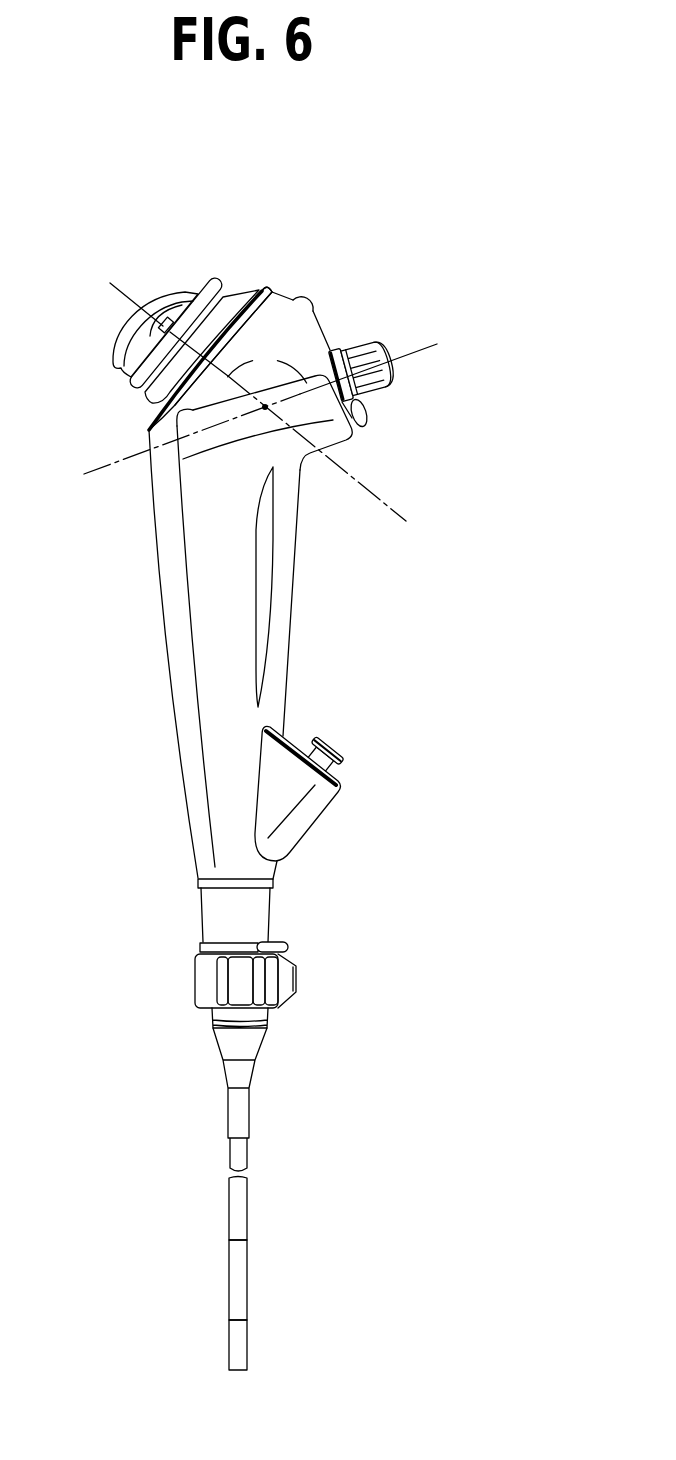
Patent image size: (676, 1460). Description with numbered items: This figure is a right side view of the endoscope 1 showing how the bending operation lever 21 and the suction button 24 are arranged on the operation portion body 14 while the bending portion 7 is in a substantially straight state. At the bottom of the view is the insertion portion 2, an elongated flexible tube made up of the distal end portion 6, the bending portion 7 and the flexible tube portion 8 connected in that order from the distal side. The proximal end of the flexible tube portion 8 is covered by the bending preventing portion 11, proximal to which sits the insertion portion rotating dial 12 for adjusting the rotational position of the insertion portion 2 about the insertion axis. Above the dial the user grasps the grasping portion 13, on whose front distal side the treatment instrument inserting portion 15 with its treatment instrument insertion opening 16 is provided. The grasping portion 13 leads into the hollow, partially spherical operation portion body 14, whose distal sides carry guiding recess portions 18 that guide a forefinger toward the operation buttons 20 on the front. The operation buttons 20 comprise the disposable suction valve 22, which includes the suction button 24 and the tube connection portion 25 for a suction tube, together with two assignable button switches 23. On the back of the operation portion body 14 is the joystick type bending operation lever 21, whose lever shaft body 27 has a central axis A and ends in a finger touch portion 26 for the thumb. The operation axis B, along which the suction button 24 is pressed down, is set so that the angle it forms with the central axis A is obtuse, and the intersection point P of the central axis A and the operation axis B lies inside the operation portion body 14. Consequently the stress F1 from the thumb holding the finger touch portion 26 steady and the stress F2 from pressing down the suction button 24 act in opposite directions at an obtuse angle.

The endoscope 1 is at (281, 762).
The insertion portion 2 is at (291, 1274).
The distal end portion 6 is at (264, 1345).
The bending portion 7 is at (248, 1276).
The flexible tube portion 8 is at (248, 1207).
The bending preventing portion 11 is at (255, 1073).
The insertion portion rotating dial 12 is at (298, 976).
The grasping portion 13 is at (168, 643).
The operation portion body 14 is at (281, 292).
The treatment instrument inserting portion 15 is at (327, 802).
The treatment instrument insertion opening 16 is at (341, 752).
The guiding recess portion 18 is at (243, 437).
The operation buttons 20 is at (284, 346).
The bending operation lever 21 is at (179, 286).
The suction valve 22 is at (379, 334).
The button switches 23 is at (404, 439).
The suction button 24 is at (387, 391).
The tube connection portion 25 is at (306, 300).
The finger touch portion 26 is at (116, 356).
The lever shaft body 27 is at (168, 320).
The central axis A is at (127, 294).
The operation axis B is at (376, 360).
The intersection point P is at (265, 424).
The stress F1 is at (413, 527).
The stress F2 is at (73, 478).